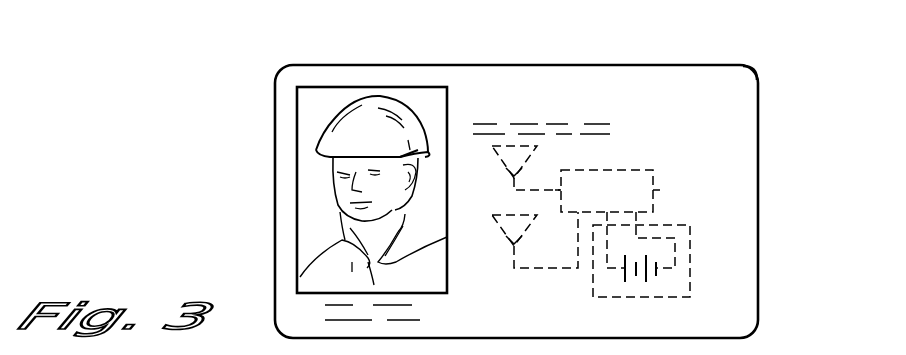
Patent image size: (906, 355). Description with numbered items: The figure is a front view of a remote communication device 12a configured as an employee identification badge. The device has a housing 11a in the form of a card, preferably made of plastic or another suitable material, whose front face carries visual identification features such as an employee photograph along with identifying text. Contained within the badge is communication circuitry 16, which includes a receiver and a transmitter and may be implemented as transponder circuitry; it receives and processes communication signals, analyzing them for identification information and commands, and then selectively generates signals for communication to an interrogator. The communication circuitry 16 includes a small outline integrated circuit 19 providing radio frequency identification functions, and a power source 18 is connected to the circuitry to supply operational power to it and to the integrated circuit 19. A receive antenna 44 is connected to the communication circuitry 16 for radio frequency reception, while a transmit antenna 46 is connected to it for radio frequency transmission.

The remote communication device 12a is at (652, 43).
The communication circuitry 16 is at (733, 101).
The housing 11a is at (275, 133).
The receive antenna 44 is at (497, 155).
The transmit antenna 46 is at (497, 236).
The small outline integrated circuit 19 is at (660, 190).
The power source 18 is at (690, 258).